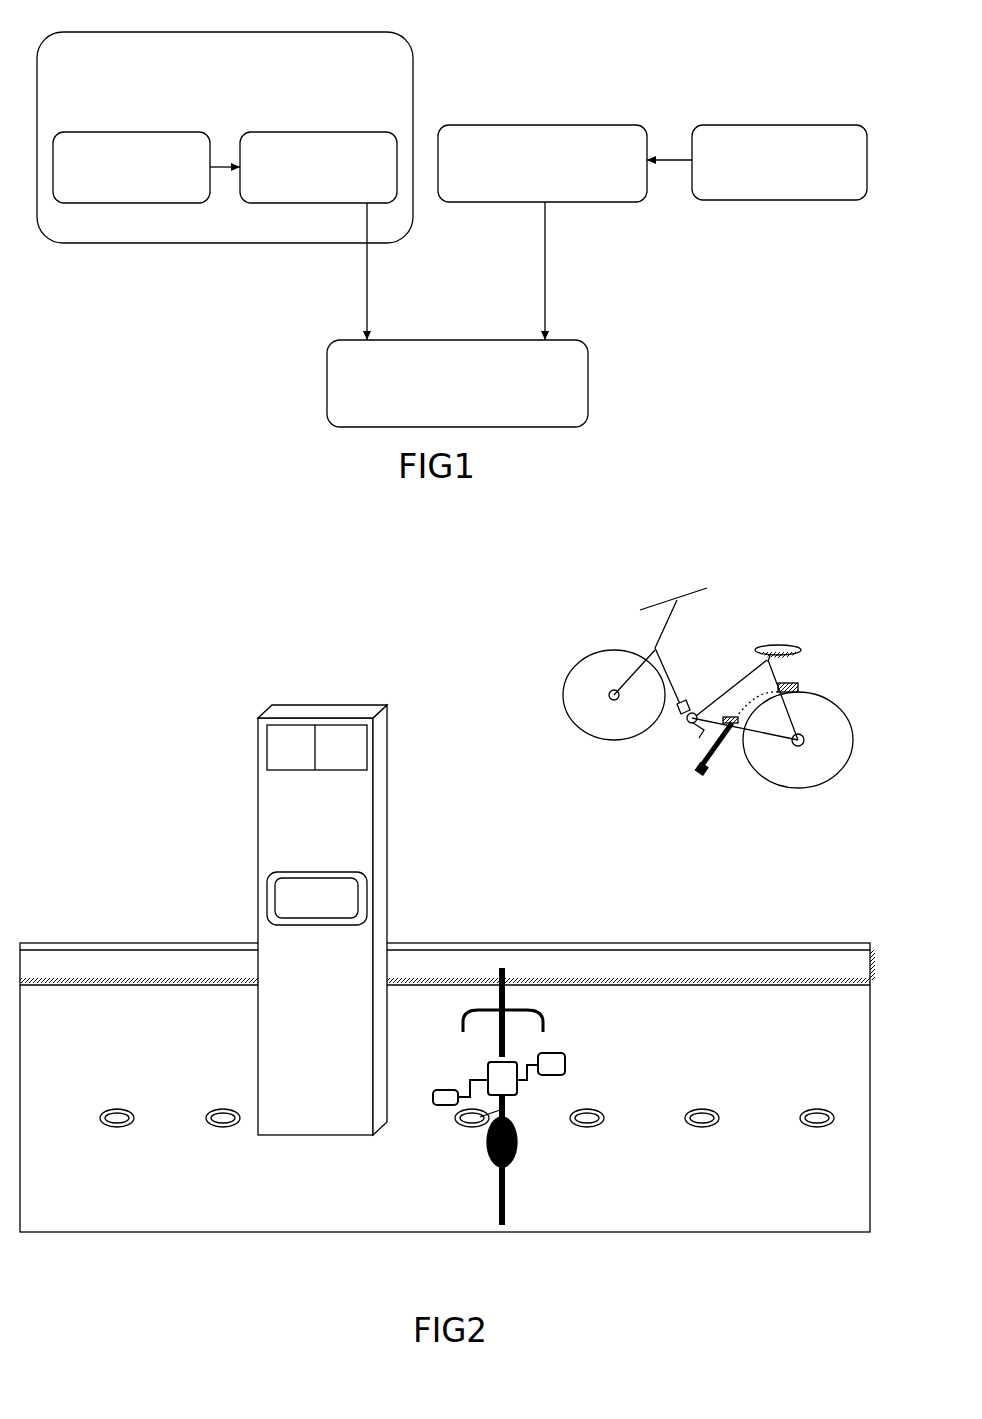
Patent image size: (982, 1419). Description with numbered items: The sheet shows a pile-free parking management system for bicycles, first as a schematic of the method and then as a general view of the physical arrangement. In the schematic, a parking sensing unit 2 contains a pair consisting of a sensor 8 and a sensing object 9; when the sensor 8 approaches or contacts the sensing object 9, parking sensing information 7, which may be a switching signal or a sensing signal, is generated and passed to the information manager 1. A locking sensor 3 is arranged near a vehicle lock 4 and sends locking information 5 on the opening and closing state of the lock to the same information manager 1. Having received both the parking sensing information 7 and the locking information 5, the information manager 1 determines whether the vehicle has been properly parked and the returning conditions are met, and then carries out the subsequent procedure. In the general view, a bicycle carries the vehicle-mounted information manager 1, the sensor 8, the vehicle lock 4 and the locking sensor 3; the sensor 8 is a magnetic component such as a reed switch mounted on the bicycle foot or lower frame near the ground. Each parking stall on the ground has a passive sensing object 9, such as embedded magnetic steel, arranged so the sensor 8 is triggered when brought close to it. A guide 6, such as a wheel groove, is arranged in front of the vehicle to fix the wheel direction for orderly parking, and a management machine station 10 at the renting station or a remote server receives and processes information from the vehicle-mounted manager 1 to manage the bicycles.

In FIG. 1, the information manager 1 is at (457, 383).
In FIG. 2, the information manager 1 is at (800, 687).
In FIG. 1, the parking sensing unit 2 is at (225, 137).
In FIG. 1, the locking sensor 3 is at (542, 163).
In FIG. 1, the vehicle lock 4 is at (757, 162).
In FIG. 1, the locking information 5 is at (662, 271).
In FIG. 2, the guide 6 is at (745, 967).
In FIG. 1, the parking sensing information 7 is at (326, 271).
In FIG. 1, the sensor 8 is at (318, 167).
In FIG. 2, the sensor 8 is at (693, 772).
In FIG. 1, the sensing object 9 is at (146, 167).
In FIG. 2, the sensing object 9 is at (590, 1117).
In FIG. 2, the machine station 10 is at (383, 805).